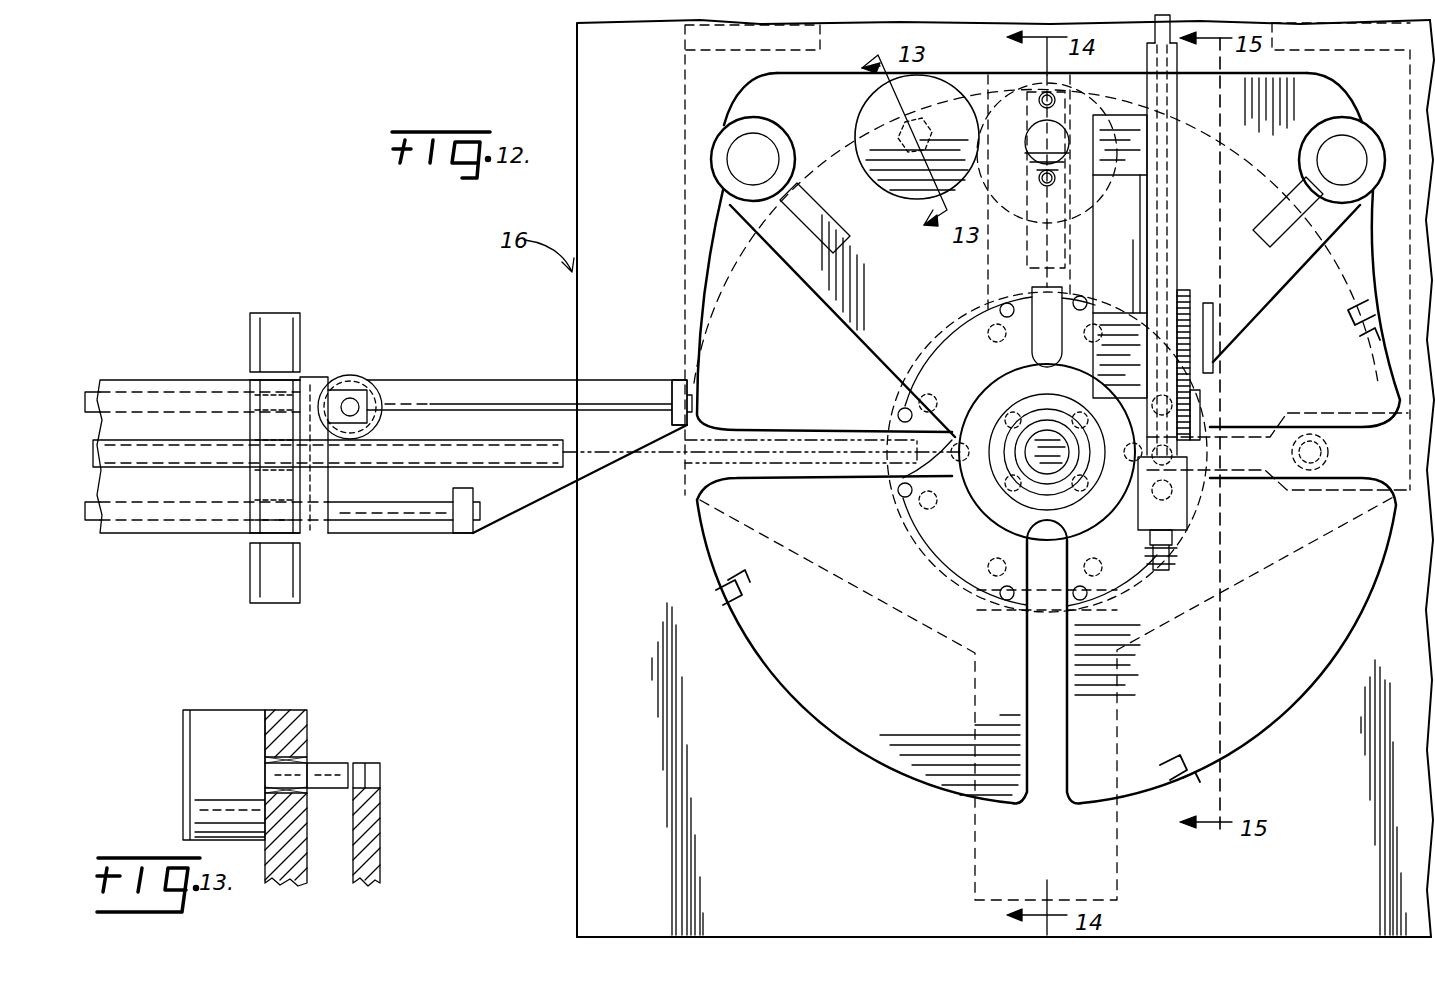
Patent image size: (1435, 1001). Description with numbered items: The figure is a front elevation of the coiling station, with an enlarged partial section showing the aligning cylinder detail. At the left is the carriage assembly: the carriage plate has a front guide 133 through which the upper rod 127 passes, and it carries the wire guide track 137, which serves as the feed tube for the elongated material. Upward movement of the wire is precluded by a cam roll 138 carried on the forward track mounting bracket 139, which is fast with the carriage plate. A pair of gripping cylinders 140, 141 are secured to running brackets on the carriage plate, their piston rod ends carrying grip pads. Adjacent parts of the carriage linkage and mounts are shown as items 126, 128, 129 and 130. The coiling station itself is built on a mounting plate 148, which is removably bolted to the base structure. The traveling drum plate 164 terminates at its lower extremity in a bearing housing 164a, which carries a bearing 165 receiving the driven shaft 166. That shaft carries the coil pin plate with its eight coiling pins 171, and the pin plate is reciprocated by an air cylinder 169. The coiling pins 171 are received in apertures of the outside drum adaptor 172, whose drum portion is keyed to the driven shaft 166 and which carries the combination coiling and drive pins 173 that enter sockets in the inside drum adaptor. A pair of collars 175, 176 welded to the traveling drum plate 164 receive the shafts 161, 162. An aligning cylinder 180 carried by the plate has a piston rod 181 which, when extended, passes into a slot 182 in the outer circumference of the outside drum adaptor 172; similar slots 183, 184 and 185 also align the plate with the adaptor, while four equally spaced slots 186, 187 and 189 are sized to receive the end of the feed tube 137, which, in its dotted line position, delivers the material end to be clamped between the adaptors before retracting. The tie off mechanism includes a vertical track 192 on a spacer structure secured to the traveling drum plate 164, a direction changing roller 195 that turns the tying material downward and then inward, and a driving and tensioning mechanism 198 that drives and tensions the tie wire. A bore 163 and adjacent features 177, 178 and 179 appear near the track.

In FIG. 12, the link 126 is at (512, 520).
In FIG. 12, the upper rod 127 is at (512, 385).
In FIG. 12, the rod 128 is at (372, 532).
In FIG. 12, the pin block 129 is at (678, 380).
In FIG. 12, the block 130 is at (460, 535).
In FIG. 12, the front guide 133 is at (307, 376).
In FIG. 12, the wire guide track 137 is at (425, 462).
In FIG. 12, the cam roll 138 is at (383, 342).
In FIG. 12, the forward track mounting bracket 139 is at (361, 391).
In FIG. 12, the gripping cylinder 140 is at (255, 338).
In FIG. 12, the gripping cylinder 141 is at (258, 573).
In FIG. 12, the mounting plate 148 is at (592, 737).
In FIG. 12, the shaft 161 is at (750, 148).
In FIG. 12, the shaft 162 is at (1350, 153).
In FIG. 12, the bore 163 is at (978, 62).
In FIG. 12, the traveling drum plate 164 is at (845, 312).
In FIG. 13, the traveling drum plate 164 is at (283, 883).
In FIG. 12, the bearing housing 164a is at (913, 532).
In FIG. 12, the bearing 165 is at (1067, 500).
In FIG. 12, the driven shaft 166 is at (1024, 475).
In FIG. 12, the air cylinder 169 is at (1047, 467).
In FIG. 12, the coiling pins 171 is at (898, 412).
In FIG. 12, the outside drum adaptor 172 is at (905, 772).
In FIG. 13, the outside drum adaptor 172 is at (383, 840).
In FIG. 12, the combination coiling and drive pins 173 is at (1006, 411).
In FIG. 12, the collar 175 is at (711, 160).
In FIG. 12, the collar 176 is at (1383, 185).
In FIG. 12, the channel 177 is at (1027, 258).
In FIG. 12, the pin 178 is at (1050, 97).
In FIG. 12, the pin 179 is at (1047, 180).
In FIG. 12, the aligning cylinder 180 is at (858, 115).
In FIG. 13, the aligning cylinder 180 is at (200, 765).
In FIG. 12, the piston rod 181 is at (899, 205).
In FIG. 13, the piston rod 181 is at (327, 763).
In FIG. 13, the slot 182 is at (375, 770).
In FIG. 12, the slot 183 is at (1355, 330).
In FIG. 12, the slot 184 is at (1175, 790).
In FIG. 12, the slot 185 is at (717, 610).
In FIG. 12, the slot 186 is at (1037, 792).
In FIG. 12, the slot 187 is at (1332, 452).
In FIG. 12, the slot 189 is at (700, 487).
In FIG. 12, the vertical track 192 is at (1178, 95).
In FIG. 12, the direction changing roller 195 is at (1153, 35).
In FIG. 12, the driving and tensioning mechanism 198 is at (1187, 493).